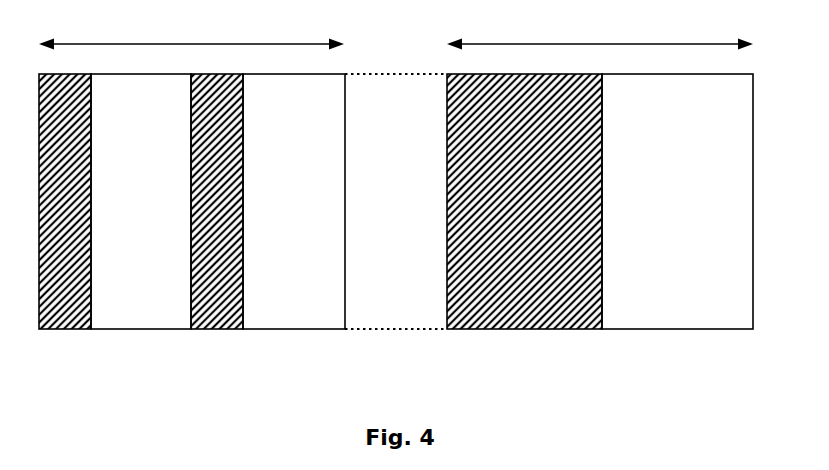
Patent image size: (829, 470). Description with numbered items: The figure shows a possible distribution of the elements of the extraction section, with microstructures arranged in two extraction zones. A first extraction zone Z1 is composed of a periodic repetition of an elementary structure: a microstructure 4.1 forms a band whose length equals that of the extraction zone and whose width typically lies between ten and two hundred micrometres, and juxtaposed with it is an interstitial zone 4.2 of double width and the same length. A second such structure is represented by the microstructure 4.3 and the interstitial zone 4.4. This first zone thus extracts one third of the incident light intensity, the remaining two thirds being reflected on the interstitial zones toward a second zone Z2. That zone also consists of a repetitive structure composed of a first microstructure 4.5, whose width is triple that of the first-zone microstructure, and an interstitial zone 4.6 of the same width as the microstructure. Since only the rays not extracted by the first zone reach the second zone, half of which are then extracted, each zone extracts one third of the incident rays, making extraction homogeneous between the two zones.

The first extraction zone Z1 is at (191, 35).
The second extraction zone Z2 is at (600, 35).
The microstructure 4.1 is at (52, 329).
The interstitial zone 4.2 is at (140, 329).
The microstructure 4.3 is at (213, 329).
The interstitial zone 4.4 is at (293, 329).
The first microstructure 4.5 is at (517, 329).
The interstitial zone 4.6 is at (690, 329).